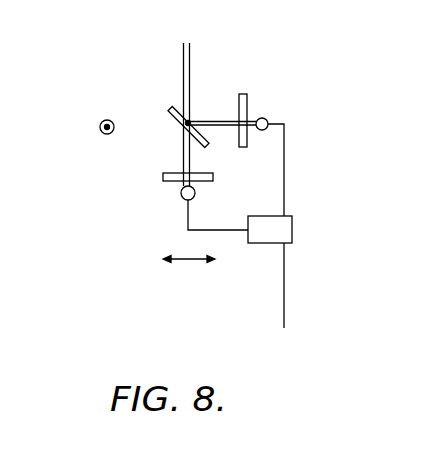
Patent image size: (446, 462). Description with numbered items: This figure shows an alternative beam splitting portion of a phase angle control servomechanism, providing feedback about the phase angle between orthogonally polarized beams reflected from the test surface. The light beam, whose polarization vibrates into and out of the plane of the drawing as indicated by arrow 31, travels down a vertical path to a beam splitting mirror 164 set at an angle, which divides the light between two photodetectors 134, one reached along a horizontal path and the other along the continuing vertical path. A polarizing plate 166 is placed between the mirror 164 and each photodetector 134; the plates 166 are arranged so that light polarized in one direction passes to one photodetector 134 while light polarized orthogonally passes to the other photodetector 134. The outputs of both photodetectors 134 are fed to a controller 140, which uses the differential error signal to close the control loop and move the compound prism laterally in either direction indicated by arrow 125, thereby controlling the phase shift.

The arrow 31 is at (100, 122).
The beam splitting mirror 164 is at (169, 108).
The polarizing plate 166 is at (244, 80).
The photodetector 134 is at (263, 118).
The arrow 125 is at (193, 262).
The controller 140 is at (265, 243).